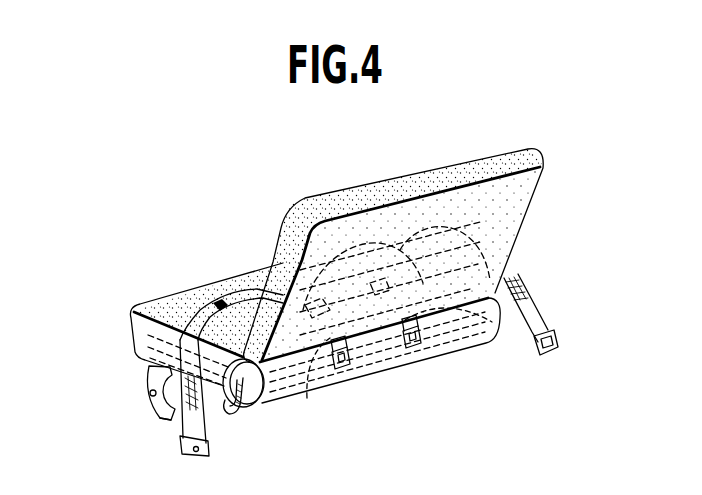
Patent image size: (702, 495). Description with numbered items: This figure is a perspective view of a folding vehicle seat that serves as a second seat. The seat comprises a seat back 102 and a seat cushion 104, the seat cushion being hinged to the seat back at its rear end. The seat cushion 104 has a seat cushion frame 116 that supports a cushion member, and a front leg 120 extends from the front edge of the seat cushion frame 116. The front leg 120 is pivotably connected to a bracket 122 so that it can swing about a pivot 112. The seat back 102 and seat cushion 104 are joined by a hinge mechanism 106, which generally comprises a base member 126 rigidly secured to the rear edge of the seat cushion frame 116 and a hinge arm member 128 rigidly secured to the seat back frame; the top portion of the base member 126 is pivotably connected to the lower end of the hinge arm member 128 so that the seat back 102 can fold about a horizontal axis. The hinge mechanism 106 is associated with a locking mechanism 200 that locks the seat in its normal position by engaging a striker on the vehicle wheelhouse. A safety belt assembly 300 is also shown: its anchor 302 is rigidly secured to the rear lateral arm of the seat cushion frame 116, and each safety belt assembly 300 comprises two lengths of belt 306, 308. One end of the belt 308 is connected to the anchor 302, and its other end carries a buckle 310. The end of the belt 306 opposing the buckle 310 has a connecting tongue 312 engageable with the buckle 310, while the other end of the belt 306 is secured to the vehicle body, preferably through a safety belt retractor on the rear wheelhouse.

The seat back 102 is at (523, 203).
The seat cushion 104 is at (150, 303).
The hinge mechanism 106 is at (222, 345).
The pivot 112 is at (123, 403).
The seat cushion frame 116 is at (148, 347).
The front leg 120 is at (131, 391).
The bracket 122 is at (140, 436).
The base member 126 is at (250, 403).
The hinge arm member 128 is at (250, 288).
The locking mechanism 200 is at (231, 436).
The safety belt assembly 300 is at (256, 278).
The anchor 302 is at (343, 365).
The belt 306 is at (183, 430).
The belt 308 is at (328, 340).
The buckle 310 is at (328, 310).
The connecting tongue 312 is at (393, 254).